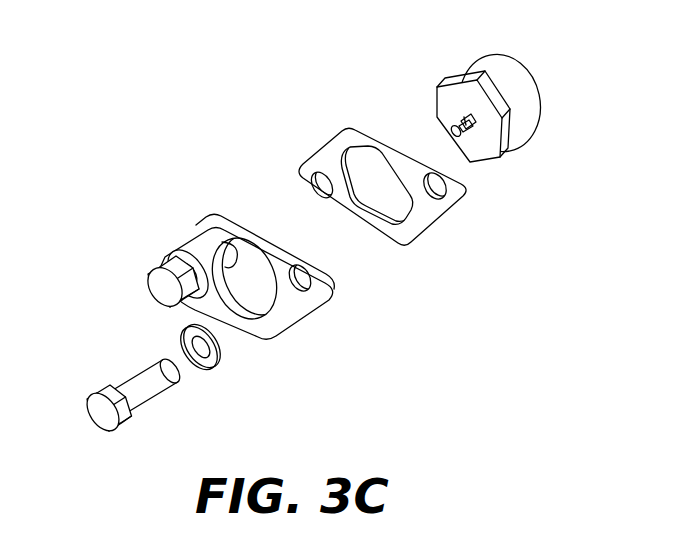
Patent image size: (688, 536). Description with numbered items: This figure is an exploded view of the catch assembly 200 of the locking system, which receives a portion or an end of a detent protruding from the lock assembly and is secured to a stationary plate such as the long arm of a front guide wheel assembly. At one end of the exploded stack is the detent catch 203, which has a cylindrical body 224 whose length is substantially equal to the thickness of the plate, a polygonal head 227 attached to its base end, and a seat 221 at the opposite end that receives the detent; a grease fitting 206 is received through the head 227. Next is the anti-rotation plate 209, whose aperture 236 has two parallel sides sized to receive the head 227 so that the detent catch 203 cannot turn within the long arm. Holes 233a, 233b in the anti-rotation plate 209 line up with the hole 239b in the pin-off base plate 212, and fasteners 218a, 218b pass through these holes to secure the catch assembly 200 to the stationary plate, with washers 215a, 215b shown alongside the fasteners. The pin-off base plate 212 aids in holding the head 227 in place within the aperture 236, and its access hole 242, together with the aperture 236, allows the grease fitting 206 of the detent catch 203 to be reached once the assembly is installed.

The catch assembly 200 is at (227, 124).
The detent catch 203 is at (487, 116).
The grease fitting 206 is at (440, 123).
The anti-rotation plate 209 is at (376, 183).
The pin-off base plate 212 is at (279, 272).
The washer 215a is at (180, 256).
The washer 215b is at (213, 370).
The fastener 218a is at (152, 277).
The fastener 218b is at (155, 402).
The seat 221 is at (541, 90).
The body 224 is at (520, 143).
The head 227 is at (500, 162).
The hole 233a is at (303, 162).
The hole 233b is at (440, 202).
The aperture 236 is at (405, 227).
The hole 239b is at (310, 297).
The access hole 242 is at (265, 336).